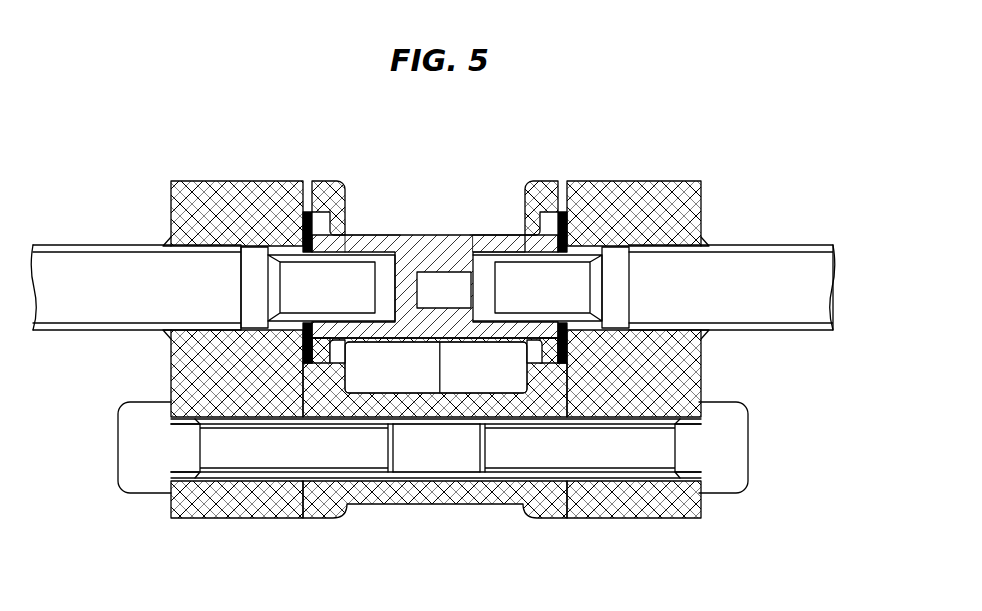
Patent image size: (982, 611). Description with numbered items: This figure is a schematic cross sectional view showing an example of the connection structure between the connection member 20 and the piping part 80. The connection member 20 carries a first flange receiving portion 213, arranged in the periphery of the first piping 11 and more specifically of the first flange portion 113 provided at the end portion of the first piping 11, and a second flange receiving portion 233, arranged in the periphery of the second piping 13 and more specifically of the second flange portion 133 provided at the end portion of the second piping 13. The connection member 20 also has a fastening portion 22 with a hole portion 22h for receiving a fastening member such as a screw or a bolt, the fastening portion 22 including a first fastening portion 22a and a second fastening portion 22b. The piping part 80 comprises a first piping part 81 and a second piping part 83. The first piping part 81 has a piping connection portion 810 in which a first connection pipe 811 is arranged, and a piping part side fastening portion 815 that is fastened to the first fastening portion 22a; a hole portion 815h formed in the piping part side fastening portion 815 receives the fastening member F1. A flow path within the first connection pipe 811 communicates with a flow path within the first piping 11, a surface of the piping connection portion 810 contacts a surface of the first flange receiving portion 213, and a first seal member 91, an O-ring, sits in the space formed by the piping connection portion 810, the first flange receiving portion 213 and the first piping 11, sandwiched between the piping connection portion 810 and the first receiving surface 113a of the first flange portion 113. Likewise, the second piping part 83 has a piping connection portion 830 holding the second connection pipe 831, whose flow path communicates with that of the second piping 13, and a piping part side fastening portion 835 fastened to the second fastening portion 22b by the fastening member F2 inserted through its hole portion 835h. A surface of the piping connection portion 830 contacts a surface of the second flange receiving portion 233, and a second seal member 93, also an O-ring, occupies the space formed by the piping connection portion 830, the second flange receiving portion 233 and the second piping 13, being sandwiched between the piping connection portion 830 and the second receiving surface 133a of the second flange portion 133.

The first piping 11 is at (435, 238).
The second piping 13 is at (482, 193).
The first flange portion 113 is at (350, 222).
The first receiving surface 113a is at (345, 228).
The second flange portion 133 is at (527, 223).
The second receiving surface 133a is at (520, 220).
The connection member 20 is at (318, 519).
The fastening portion 22 is at (435, 453).
The first fastening portion 22a is at (345, 382).
The second fastening portion 22b is at (527, 377).
The hole portion 22h is at (418, 505).
The piping part 80 is at (433, 361).
The first piping part 81 is at (213, 361).
The piping connection portion 810 is at (205, 237).
The first connection pipe 811 is at (57, 246).
The piping part side fastening portion 815 is at (203, 398).
The hole portion 815h is at (217, 488).
The second piping part 83 is at (654, 361).
The piping connection portion 830 is at (665, 237).
The second connection pipe 831 is at (810, 247).
The piping part side fastening portion 835 is at (668, 398).
The hole portion 835h is at (650, 488).
The first seal member 91 is at (296, 212).
The second seal member 93 is at (570, 212).
The first flange receiving portion 213 is at (323, 190).
The second flange receiving portion 233 is at (540, 182).
The fastening member F1 is at (278, 455).
The fastening member F2 is at (588, 455).